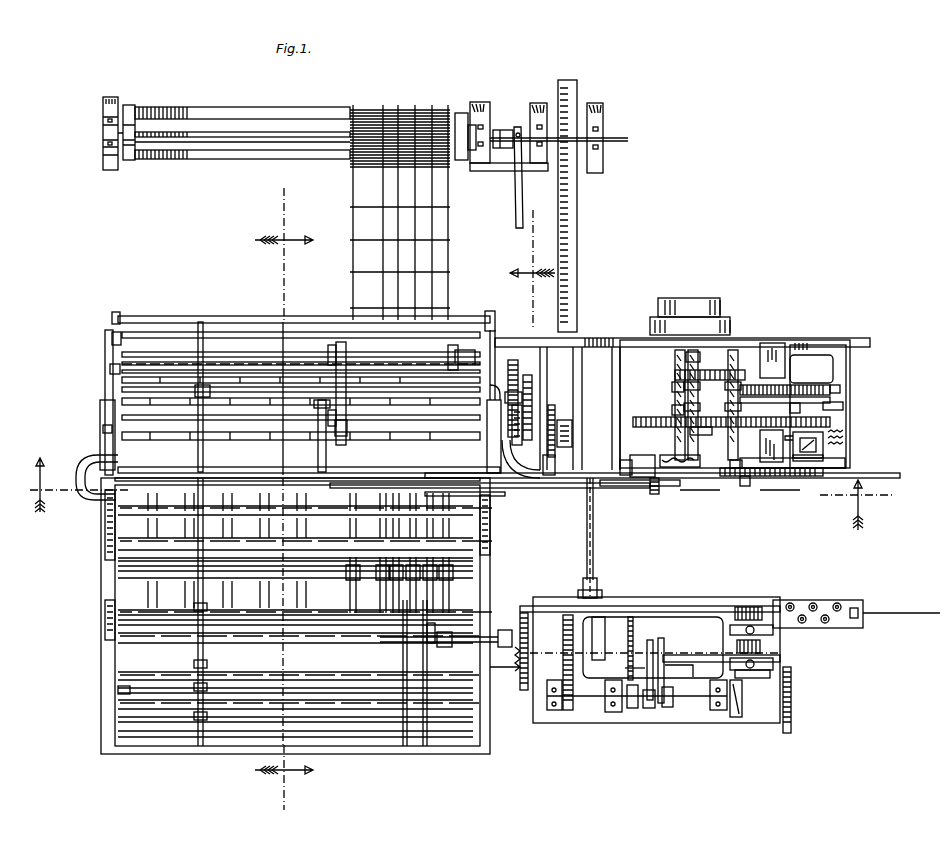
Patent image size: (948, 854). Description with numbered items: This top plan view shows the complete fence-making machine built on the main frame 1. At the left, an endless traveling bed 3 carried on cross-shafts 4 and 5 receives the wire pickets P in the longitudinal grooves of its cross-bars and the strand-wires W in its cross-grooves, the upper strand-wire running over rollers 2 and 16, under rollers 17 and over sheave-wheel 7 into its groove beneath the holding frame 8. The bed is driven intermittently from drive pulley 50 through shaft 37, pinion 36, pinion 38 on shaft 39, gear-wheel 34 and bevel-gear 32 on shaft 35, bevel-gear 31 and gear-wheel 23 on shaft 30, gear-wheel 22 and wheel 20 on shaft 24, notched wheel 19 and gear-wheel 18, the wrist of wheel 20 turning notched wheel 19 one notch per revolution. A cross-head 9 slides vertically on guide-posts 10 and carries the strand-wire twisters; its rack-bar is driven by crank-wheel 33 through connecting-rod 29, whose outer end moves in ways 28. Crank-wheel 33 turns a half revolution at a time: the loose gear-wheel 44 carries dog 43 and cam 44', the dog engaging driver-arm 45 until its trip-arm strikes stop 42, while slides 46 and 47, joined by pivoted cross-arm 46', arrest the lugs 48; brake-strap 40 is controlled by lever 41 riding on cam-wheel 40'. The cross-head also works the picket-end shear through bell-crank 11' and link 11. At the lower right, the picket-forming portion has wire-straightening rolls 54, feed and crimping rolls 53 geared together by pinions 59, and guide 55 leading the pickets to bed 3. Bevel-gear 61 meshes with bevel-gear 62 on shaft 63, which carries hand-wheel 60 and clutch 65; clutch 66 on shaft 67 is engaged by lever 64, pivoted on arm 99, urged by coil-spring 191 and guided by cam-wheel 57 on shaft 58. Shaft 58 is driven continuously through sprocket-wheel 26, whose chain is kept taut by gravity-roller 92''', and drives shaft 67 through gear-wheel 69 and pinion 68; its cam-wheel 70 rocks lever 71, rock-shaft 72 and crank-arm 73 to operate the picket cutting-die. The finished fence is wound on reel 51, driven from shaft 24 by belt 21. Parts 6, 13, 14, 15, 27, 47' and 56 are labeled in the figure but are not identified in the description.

The main frame 1 is at (96, 353).
The roller 2 is at (95, 375).
The endless traveling bed 3 is at (235, 665).
The cross-shaft 4 is at (120, 689).
The cross-shaft 5 is at (122, 389).
The bar 6 is at (118, 566).
The sheave-wheel 7 is at (345, 562).
The frame 8 is at (118, 540).
The cross-head 9 is at (266, 470).
The guide-posts 10 is at (112, 452).
The link 11 is at (328, 436).
The bell-crank 11' is at (252, 398).
The block 13 is at (102, 420).
The bar 14 is at (347, 370).
The bracket 15 is at (463, 357).
The roller 16 is at (303, 315).
The rollers 17 is at (112, 337).
The gear-wheel 18 is at (513, 360).
The notched wheel 19 is at (527, 375).
The drive-wheel 20 is at (515, 431).
The belt 21 is at (577, 244).
The gear-wheel 22 is at (556, 415).
The gear-wheel 23 is at (555, 468).
The shaft 24 is at (574, 428).
The sprocket-wheel 26 is at (596, 514).
The bar 27 is at (573, 490).
The ways 28 is at (548, 490).
The connecting-rod 29 is at (630, 488).
The shaft 30 is at (655, 490).
The bevel-gear 31 is at (662, 493).
The bevel-gear 32 is at (688, 465).
The crank-wheel 33 is at (760, 480).
The gear-wheel 34 is at (735, 404).
The shaft 35 is at (672, 390).
The pinion 36 is at (675, 375).
The shaft 37 is at (693, 362).
The pinion 38 is at (712, 385).
The shaft 39 is at (712, 401).
The brake-strap 40 is at (796, 363).
The cam-wheel 40' is at (785, 406).
The lever 41 is at (840, 389).
The stop 42 is at (843, 405).
The dog 43 is at (806, 408).
The gear-wheel 44 is at (741, 423).
The cam 44' is at (706, 432).
The driver-arm 45 is at (762, 446).
The slide 46 is at (829, 445).
The cross-arm 46' is at (834, 455).
The slide 47 is at (861, 425).
The spring 47' is at (865, 435).
The lugs 48 is at (830, 465).
The drive pulley 50 is at (730, 318).
The reel 51 is at (226, 133).
The feed and crimping rolls 53 is at (752, 606).
The wire-straightening rolls 54 is at (826, 602).
The guide 55 is at (665, 607).
The housing 56 is at (653, 647).
The cam-wheel 57 is at (655, 642).
The shaft 58 is at (696, 655).
The pinions 59 is at (765, 645).
The hand-wheel 60 is at (792, 690).
The bevel-gear 61 is at (770, 676).
The bevel-gear 62 is at (749, 700).
The shaft 63 is at (708, 699).
The lever 64 is at (637, 696).
The clutch 65 is at (662, 706).
The clutch 66 is at (634, 705).
The shaft 67 is at (512, 130).
The pinion 68 is at (563, 702).
The gear-wheel 69 is at (566, 640).
The cam-wheel 70 is at (519, 660).
The lever 71 is at (450, 641).
The rock-shaft 72 is at (452, 645).
The crank-arm 73 is at (443, 648).
The antifriction gravity-roller 92''' is at (602, 538).
The arm 99 is at (625, 670).
The coil-spring 191 is at (679, 671).
The strand-wires W is at (400, 212).
The wire pickets P is at (432, 248).